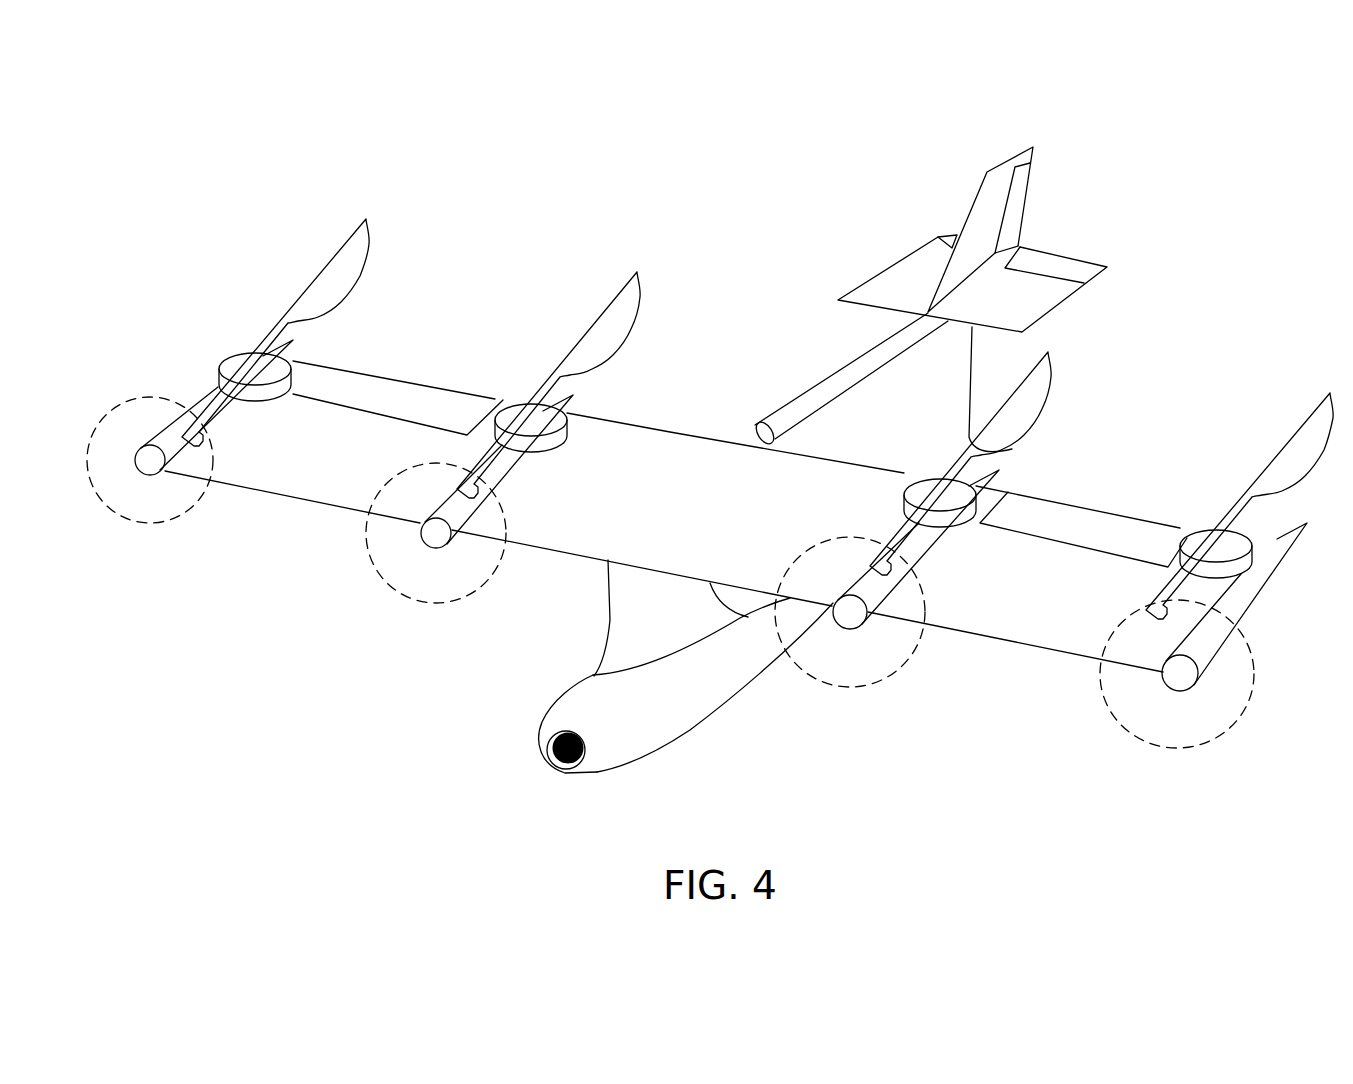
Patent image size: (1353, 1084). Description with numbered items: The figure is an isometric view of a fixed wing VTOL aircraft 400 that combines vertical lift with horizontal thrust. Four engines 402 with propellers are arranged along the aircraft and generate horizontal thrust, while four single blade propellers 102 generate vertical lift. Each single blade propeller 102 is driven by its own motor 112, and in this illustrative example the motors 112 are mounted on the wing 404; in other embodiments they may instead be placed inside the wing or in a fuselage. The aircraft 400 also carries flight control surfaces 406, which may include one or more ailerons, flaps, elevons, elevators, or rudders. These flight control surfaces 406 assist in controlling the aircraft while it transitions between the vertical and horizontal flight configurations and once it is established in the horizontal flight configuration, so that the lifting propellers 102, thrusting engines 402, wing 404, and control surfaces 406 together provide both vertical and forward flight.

The VTOL aircraft 400 is at (1192, 153).
The engine 402 is at (150, 462).
The wing 404 is at (698, 463).
The flight control surface 406 is at (948, 247).
The single blade propeller 102 is at (272, 338).
The motor 112 is at (280, 370).